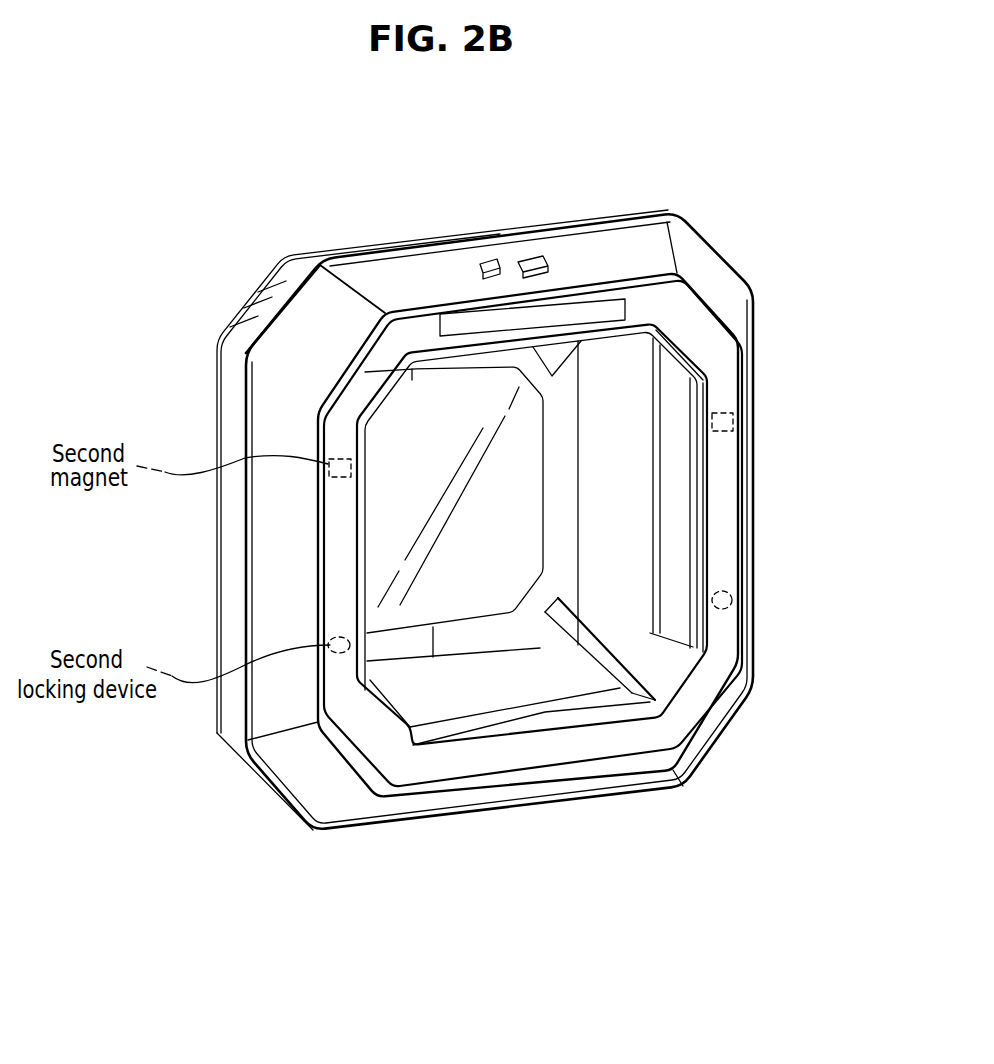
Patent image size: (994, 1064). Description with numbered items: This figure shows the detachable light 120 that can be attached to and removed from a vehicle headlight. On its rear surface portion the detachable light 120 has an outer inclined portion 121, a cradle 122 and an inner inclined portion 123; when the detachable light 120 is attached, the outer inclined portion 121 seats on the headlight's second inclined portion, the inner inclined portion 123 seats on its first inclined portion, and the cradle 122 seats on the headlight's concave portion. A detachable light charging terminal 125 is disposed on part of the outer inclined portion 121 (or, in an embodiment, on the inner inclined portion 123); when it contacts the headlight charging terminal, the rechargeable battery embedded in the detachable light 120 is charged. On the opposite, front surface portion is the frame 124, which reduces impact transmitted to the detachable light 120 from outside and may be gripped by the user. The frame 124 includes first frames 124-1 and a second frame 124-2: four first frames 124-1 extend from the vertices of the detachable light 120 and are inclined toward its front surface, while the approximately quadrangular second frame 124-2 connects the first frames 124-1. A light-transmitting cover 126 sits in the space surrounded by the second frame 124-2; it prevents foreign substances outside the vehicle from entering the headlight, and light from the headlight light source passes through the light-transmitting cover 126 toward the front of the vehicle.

The detachable light 120 is at (722, 237).
The outer inclined portion 121 is at (272, 540).
The cradle 122 is at (338, 608).
The inner inclined portion 123 is at (680, 542).
The frame 124 is at (615, 818).
The first frame 124-1 is at (607, 656).
The second frame 124-2 is at (505, 635).
The detachable light charging terminal 125 is at (484, 262).
The light-transmitting cover 126 is at (520, 447).